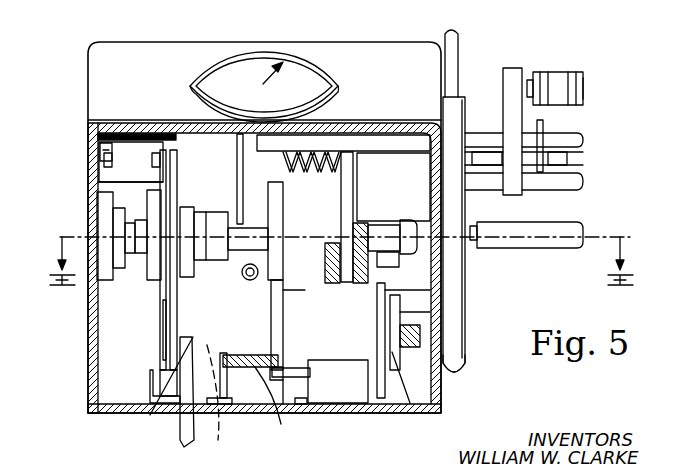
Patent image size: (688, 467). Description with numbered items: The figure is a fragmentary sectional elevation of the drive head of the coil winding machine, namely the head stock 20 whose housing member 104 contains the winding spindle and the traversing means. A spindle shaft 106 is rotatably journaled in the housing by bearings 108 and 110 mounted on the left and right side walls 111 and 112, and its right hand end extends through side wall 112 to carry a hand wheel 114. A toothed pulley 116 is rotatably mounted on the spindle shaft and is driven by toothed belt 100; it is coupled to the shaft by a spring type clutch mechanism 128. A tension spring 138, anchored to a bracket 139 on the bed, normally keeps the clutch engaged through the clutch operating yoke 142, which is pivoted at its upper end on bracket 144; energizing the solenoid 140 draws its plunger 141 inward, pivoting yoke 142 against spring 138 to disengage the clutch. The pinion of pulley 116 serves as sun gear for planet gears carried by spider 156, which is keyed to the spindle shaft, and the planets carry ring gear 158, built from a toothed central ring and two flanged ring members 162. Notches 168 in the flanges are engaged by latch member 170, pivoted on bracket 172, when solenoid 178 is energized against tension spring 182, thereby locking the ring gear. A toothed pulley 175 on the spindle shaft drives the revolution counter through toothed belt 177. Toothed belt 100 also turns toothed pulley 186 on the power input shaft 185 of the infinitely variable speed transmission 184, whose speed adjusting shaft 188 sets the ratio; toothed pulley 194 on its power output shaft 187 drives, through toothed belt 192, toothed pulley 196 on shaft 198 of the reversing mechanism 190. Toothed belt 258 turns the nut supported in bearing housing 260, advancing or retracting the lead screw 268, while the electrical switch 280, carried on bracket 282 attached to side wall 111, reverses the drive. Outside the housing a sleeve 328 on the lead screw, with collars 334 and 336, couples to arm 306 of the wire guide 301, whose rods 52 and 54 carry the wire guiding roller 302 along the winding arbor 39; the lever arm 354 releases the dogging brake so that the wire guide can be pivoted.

The head stock 20 is at (180, 45).
The winding arbor 39 is at (506, 247).
The rod 52 is at (572, 185).
The rod 54 is at (574, 143).
The toothed belt 100 is at (180, 436).
The housing member 104 is at (92, 360).
The spindle shaft 106 is at (298, 232).
The bearing 108 is at (100, 222).
The bearing 110 is at (424, 250).
The side wall 111 is at (98, 176).
The side wall 112 is at (433, 388).
The hand wheel 114 is at (453, 97).
The toothed pulley 116 is at (196, 212).
The clutch mechanism 128 is at (248, 281).
The tension spring 138 is at (300, 407).
The bracket 139 is at (258, 401).
The solenoid 140 is at (357, 392).
The plunger 141 is at (288, 370).
The clutch operating yoke 142 is at (283, 293).
The bracket 144 is at (275, 200).
The spider 156 is at (160, 283).
The ring gear 158 is at (158, 268).
The ring member 162 is at (177, 176).
The notch 168 is at (165, 178).
The latch member 170 is at (165, 312).
The bracket 172 is at (162, 340).
The toothed pulley 175 is at (362, 232).
The toothed belt 177 is at (349, 203).
The solenoid 178 is at (152, 378).
The tension spring 182 is at (215, 248).
The infinitely variable speed transmission 184 is at (264, 346).
The power input shaft 185 is at (160, 387).
The toothed pulley 186 is at (220, 405).
The power output shaft 187 is at (422, 335).
The speed adjusting shaft 188 is at (268, 290).
The reversing mechanism 190 is at (326, 268).
The toothed belt 192 is at (420, 313).
The toothed pulley 194 is at (420, 352).
The toothed pulley 196 is at (420, 293).
The shaft 198 is at (385, 302).
The toothed belt 258 is at (340, 190).
The bearing housing 260 is at (420, 184).
The lead screw 268 is at (328, 138).
The electrical switch 280 is at (176, 140).
The bracket 282 is at (99, 148).
The wire guide 301 is at (560, 72).
The roller 302 is at (582, 98).
The arm 306 is at (513, 78).
The sleeve 328 is at (560, 164).
The collar 334 is at (487, 167).
The collar 336 is at (541, 155).
The lever arm 354 is at (447, 35).